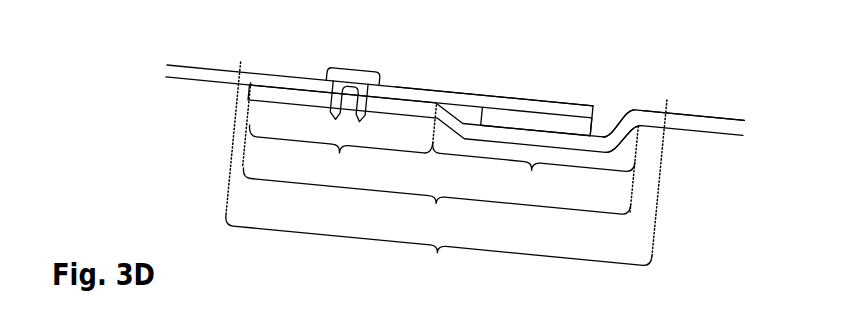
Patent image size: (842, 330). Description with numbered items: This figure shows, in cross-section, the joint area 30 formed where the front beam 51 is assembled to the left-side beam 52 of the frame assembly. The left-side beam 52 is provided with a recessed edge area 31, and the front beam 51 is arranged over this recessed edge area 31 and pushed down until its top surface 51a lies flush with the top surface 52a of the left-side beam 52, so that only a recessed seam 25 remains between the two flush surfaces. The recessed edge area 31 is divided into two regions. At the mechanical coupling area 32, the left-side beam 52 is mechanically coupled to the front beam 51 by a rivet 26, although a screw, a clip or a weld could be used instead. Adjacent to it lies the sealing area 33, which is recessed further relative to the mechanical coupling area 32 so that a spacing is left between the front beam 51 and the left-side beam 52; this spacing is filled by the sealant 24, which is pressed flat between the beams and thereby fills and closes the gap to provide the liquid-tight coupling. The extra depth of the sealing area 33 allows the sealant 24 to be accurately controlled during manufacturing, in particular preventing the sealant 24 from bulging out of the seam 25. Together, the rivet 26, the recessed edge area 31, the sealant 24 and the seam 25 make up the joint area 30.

The sealant 24 is at (527, 122).
The seam 25 is at (616, 104).
The rivet 26 is at (350, 76).
The joint area 30 is at (445, 172).
The recessed edge area 31 is at (436, 203).
The mechanical coupling area 32 is at (340, 134).
The sealing area 33 is at (533, 159).
The front beam 51 is at (303, 84).
The top surface 51a is at (464, 87).
The left-side beam 52 is at (682, 127).
The top surface 52a is at (731, 118).